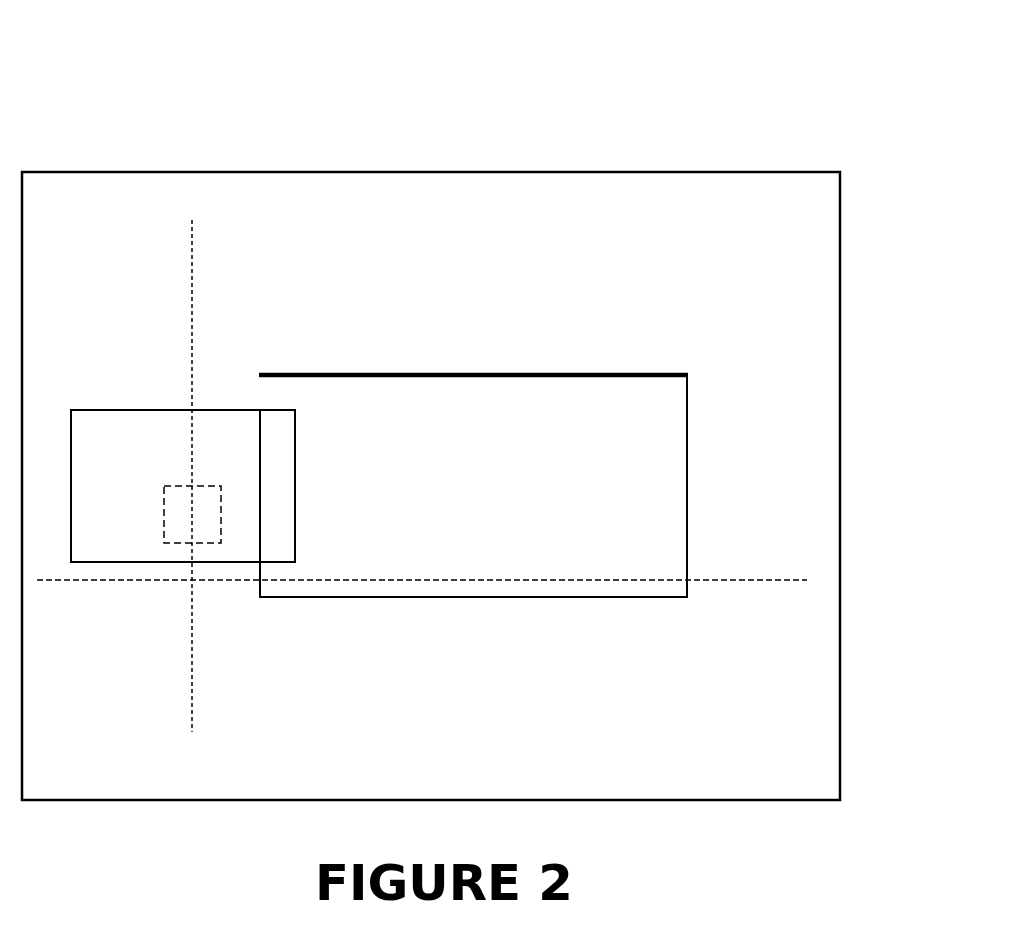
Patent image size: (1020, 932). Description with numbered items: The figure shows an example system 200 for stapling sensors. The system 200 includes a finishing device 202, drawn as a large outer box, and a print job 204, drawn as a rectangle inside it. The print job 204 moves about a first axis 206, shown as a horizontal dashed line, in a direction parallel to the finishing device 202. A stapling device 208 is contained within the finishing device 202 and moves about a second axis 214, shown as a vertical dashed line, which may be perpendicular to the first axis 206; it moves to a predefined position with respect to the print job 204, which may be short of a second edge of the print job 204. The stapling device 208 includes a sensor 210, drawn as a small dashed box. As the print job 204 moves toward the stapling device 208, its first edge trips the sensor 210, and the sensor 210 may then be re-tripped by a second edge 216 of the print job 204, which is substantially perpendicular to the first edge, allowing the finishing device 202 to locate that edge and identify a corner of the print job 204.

The system 200 is at (116, 76).
The finishing device 202 is at (841, 247).
The print job 204 is at (688, 477).
The first axis 206 is at (745, 582).
The stapling device 208 is at (124, 410).
The sensor 210 is at (164, 515).
The second axis 214 is at (193, 271).
The second edge 216 is at (457, 375).